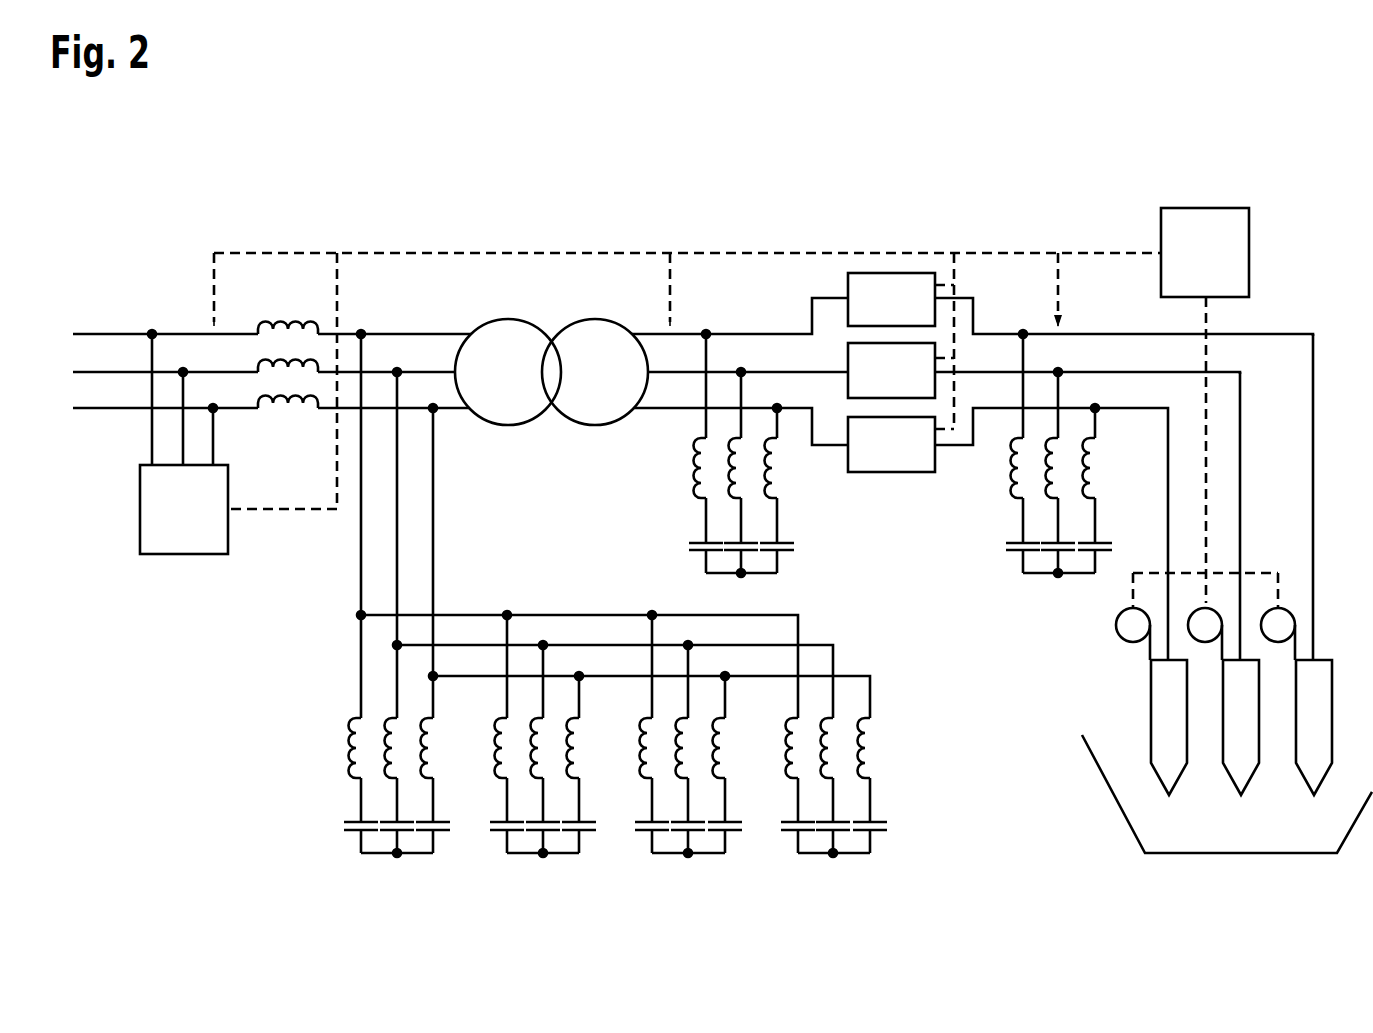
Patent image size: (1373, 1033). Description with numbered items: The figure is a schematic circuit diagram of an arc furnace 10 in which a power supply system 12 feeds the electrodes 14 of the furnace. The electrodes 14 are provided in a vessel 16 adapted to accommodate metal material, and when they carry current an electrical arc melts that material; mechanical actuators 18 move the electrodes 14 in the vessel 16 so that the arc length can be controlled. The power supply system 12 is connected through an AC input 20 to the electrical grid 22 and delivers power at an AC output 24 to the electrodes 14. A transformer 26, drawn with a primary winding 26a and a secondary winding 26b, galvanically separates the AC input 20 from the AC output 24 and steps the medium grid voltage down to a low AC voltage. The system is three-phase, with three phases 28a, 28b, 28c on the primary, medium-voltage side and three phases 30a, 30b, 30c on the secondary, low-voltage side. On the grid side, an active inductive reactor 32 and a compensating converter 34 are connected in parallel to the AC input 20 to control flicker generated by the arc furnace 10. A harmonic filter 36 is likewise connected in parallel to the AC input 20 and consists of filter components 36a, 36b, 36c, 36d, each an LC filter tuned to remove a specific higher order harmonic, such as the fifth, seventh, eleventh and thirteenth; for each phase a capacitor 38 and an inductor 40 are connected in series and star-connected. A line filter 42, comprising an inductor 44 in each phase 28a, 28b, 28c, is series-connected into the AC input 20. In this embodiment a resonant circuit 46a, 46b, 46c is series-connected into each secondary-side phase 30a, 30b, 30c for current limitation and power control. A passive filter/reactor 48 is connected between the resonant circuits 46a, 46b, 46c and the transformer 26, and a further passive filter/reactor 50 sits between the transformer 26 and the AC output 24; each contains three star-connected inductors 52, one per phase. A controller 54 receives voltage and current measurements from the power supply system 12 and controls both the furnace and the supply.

The arc furnace 10 is at (1307, 185).
The power supply system 12 is at (816, 193).
The electrodes 14 is at (1155, 783).
The vessel 16 is at (1120, 812).
The mechanical actuators 18 is at (1145, 611).
The AC input 20 is at (178, 326).
The electrical grid 22 is at (112, 326).
The AC output 24 is at (1254, 324).
The transformer 26 is at (558, 317).
The primary winding of transformer 26a is at (549, 328).
The secondary winding of transformer 26b is at (640, 327).
The first primary-side phase 28a is at (374, 334).
The second primary-side phase 28b is at (409, 372).
The third primary-side phase 28c is at (449, 408).
The first secondary-side phase 30a is at (696, 334).
The second secondary-side phase 30b is at (728, 372).
The third secondary-side phase 30c is at (766, 408).
The active inductive reactor 32 is at (160, 554).
The compensating converter 34 is at (203, 554).
The harmonic filter 36 is at (487, 778).
The first filter component 36a is at (303, 831).
The second filter component 36b is at (531, 863).
The third filter component 36c is at (679, 863).
The fourth filter component 36d is at (824, 863).
The capacitor 38 is at (300, 752).
The inductor 40 is at (300, 828).
The line filter 42 is at (280, 324).
The inductor of line filter 44 is at (277, 410).
The first resonant circuit 46a is at (872, 340).
The second resonant circuit 46b is at (893, 417).
The third resonant circuit 46c is at (918, 327).
The passive filter/reactor 48 is at (767, 581).
The passive filter/reactor 50 is at (1015, 581).
The star-connected inductors 52 is at (772, 490).
The controller 54 is at (1249, 253).